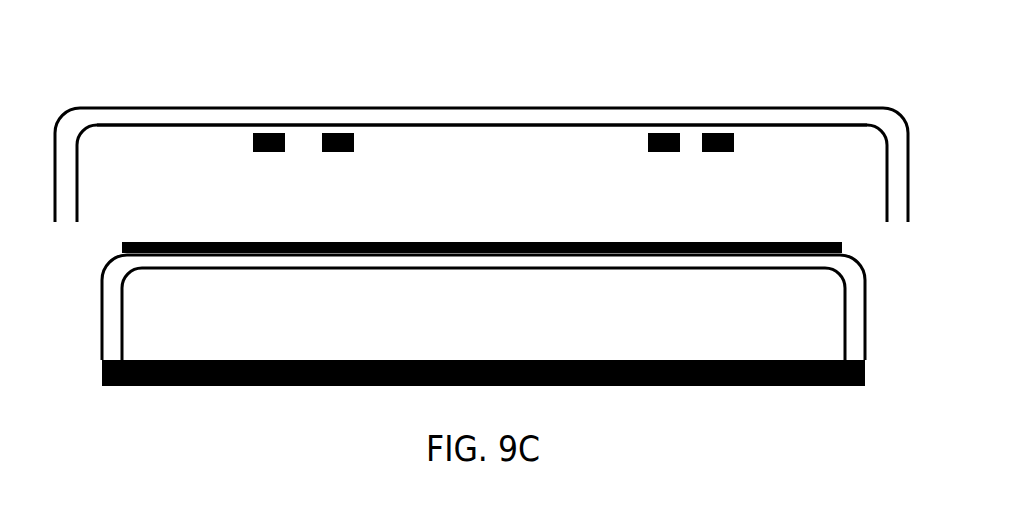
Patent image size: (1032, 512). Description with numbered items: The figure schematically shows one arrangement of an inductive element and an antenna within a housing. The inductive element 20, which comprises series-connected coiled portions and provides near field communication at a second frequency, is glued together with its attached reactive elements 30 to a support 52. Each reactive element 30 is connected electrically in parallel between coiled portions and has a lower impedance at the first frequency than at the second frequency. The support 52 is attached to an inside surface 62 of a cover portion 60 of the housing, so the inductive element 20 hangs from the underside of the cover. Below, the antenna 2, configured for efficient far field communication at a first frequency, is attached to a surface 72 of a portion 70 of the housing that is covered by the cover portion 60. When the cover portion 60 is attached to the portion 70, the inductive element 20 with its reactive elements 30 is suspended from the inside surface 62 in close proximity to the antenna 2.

The antenna 2 is at (783, 238).
The inductive element 20 is at (238, 136).
The reactive element 30 is at (338, 132).
The support 52 is at (507, 127).
The cover portion 60 is at (857, 106).
The inside surface 62 is at (799, 128).
The portion of the housing 70 is at (101, 299).
The surface 72 is at (108, 260).